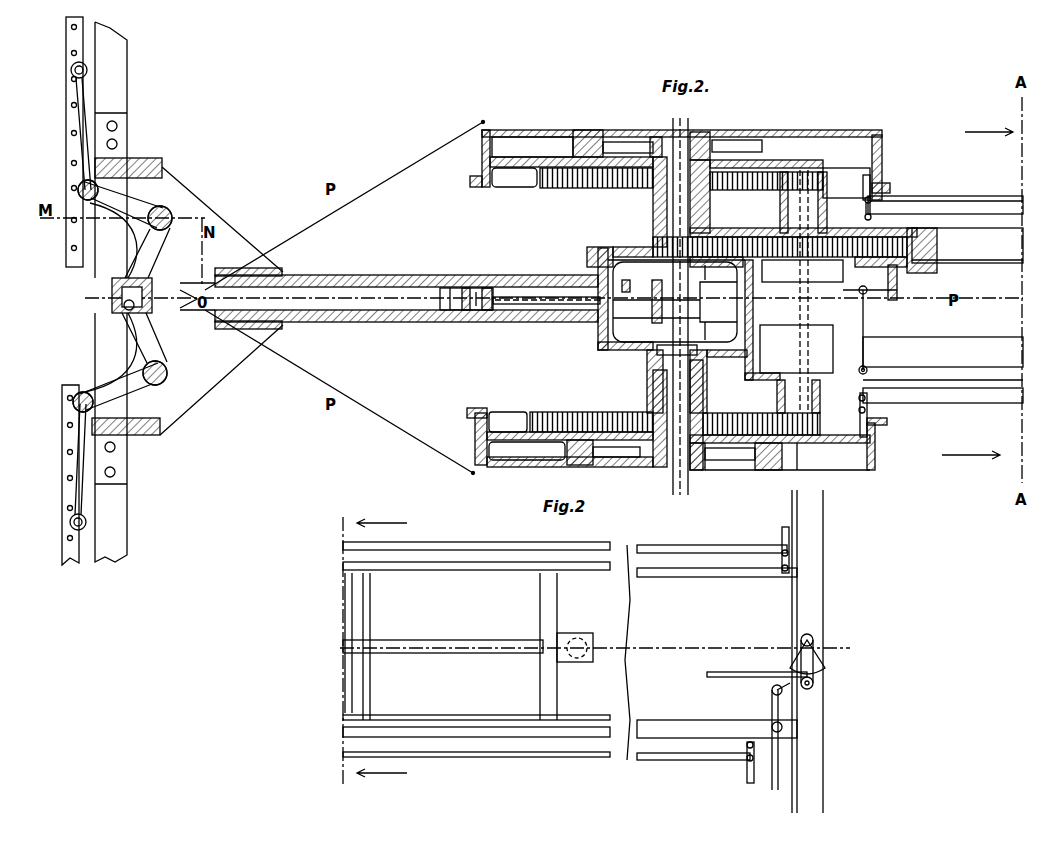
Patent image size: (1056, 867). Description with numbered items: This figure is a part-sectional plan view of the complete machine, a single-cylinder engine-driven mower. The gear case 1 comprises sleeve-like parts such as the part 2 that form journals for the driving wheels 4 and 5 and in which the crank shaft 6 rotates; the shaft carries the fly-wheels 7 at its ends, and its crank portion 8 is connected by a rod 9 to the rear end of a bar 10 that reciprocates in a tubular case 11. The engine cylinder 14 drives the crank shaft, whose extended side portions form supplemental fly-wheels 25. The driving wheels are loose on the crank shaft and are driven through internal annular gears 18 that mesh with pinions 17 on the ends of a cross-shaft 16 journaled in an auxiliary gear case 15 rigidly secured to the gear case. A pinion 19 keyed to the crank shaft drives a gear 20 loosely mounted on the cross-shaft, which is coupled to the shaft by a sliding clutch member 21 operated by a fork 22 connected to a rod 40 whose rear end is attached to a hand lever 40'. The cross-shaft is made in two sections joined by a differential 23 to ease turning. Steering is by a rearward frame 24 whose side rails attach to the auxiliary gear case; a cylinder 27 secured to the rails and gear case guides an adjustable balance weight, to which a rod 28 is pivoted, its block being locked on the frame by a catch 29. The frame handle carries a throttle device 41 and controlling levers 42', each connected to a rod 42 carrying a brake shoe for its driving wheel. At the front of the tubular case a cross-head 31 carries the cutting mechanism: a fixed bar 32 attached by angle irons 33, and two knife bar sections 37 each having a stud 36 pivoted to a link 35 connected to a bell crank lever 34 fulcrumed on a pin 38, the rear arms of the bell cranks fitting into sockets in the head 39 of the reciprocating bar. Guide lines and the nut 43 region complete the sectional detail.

The gear case 1 is at (612, 350).
The cylindrical sleeve-like part 2 is at (652, 212).
The driving wheel 4 is at (482, 162).
The driving wheel 5 is at (475, 442).
The crank shaft 6 is at (655, 480).
The fly-wheel 7 is at (594, 130).
The crank portion 8 is at (675, 302).
The rod 9 is at (590, 304).
The bar 10 is at (368, 305).
The tubular case 11 is at (462, 288).
The engine cylinder 14 is at (761, 424).
The auxiliary gear case 15 is at (748, 368).
The cross-shaft 16 is at (808, 318).
The pinion 17 is at (775, 190).
The internal annular gear 18 is at (550, 190).
The pinion 19 is at (640, 245).
The gear 20 is at (925, 252).
The sliding clutch member 21 is at (835, 272).
The fork 22 is at (870, 358).
The differential 23 is at (796, 349).
The frame 24 is at (500, 570).
The supplemental fly-wheel 25 is at (735, 282).
The cylinder 27 is at (943, 299).
The rod 28 is at (462, 645).
The catch 29 is at (578, 636).
The cross-head 31 is at (247, 313).
The bar 32 is at (122, 95).
The angle irons 33 is at (120, 144).
The bell crank lever 34 is at (148, 263).
The link 35 is at (90, 170).
The pin or stud 36 is at (70, 75).
The knife bar section 37 is at (70, 135).
The pin 38 is at (170, 210).
The head 39 is at (127, 313).
The rod 40 is at (476, 715).
The hand lever 40' is at (764, 736).
The throttle control device 41 is at (790, 664).
The rod 42 is at (712, 655).
The controlling lever 42' is at (756, 654).
The nut 43 is at (650, 360).